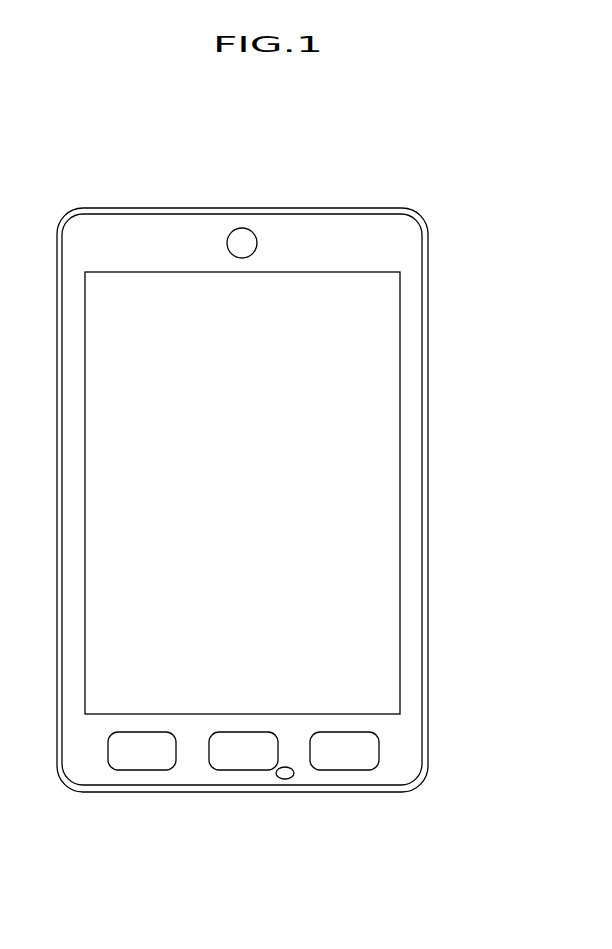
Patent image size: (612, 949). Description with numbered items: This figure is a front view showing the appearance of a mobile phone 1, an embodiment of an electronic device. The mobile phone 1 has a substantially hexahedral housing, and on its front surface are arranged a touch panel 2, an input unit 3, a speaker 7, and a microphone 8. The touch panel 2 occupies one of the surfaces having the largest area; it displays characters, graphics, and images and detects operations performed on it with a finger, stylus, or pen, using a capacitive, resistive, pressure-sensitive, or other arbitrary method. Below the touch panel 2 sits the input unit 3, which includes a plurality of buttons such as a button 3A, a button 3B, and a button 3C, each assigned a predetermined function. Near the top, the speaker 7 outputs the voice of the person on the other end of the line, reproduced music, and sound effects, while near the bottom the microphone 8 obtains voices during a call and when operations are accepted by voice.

The mobile phone 1 is at (402, 166).
The touch panel 2 is at (332, 441).
The input unit 3 is at (243, 815).
The button 3A is at (143, 770).
The button 3B is at (246, 770).
The button 3C is at (344, 792).
The speaker 7 is at (240, 228).
The microphone 8 is at (287, 779).